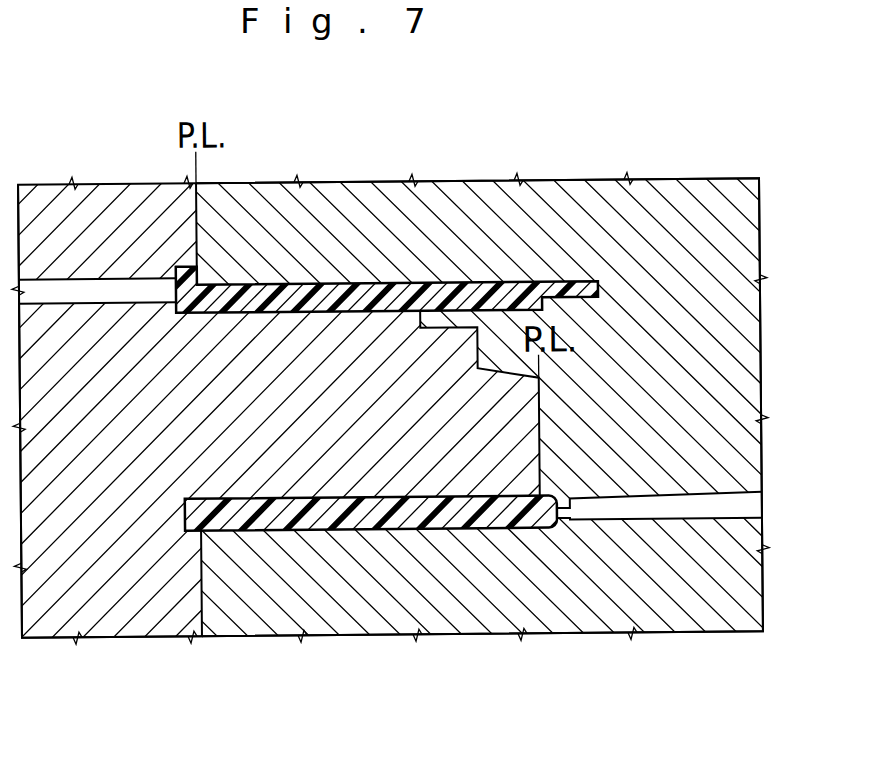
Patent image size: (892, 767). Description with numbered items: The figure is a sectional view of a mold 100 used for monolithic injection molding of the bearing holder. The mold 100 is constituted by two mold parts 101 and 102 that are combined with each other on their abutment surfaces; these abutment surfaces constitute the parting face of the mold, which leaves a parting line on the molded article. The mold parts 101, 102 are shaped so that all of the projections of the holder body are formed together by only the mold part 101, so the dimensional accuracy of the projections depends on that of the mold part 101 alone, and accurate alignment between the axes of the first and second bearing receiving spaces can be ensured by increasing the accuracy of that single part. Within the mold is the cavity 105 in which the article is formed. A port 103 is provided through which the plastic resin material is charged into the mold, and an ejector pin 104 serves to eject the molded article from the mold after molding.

The mold 100 is at (453, 182).
The mold part 101 is at (100, 182).
The mold part 102 is at (599, 182).
The port 103 is at (692, 510).
The ejector pin 104 is at (134, 286).
The cavity 105 is at (299, 291).